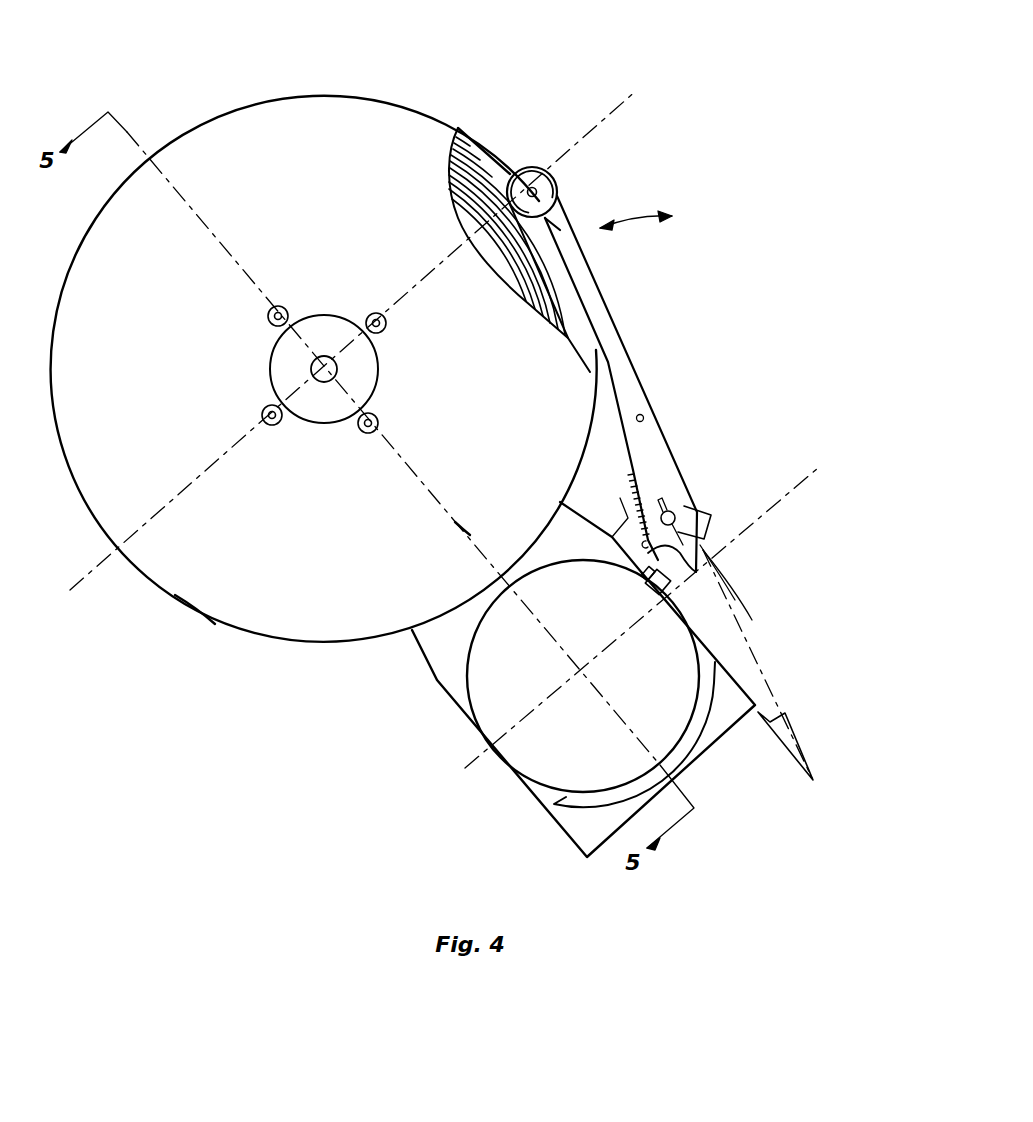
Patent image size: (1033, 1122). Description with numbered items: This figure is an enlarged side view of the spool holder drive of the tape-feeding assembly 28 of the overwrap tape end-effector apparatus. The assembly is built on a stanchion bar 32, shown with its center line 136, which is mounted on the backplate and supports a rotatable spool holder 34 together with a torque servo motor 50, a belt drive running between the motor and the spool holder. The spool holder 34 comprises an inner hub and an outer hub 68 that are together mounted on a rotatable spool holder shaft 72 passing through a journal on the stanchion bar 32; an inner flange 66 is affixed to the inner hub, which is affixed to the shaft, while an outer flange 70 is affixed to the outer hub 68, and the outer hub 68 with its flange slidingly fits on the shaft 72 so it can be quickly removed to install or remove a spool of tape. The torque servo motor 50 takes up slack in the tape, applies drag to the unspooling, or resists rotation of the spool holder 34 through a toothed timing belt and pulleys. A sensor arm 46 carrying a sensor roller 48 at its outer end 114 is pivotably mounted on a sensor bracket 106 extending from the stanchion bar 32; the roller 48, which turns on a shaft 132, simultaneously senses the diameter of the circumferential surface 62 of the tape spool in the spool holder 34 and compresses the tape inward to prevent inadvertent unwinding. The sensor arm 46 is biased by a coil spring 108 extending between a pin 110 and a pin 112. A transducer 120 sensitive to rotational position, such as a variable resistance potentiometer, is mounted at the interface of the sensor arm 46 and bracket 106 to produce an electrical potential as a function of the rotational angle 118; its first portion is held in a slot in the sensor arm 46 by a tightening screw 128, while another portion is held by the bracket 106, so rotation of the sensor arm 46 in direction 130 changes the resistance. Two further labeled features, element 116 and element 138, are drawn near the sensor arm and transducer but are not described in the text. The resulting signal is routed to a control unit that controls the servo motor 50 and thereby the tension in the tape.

The tape-feeding assembly 28 is at (766, 94).
The stanchion bar 32 is at (728, 698).
The spool holder 34 is at (324, 369).
The sensor arm 46 is at (607, 310).
The sensor roller 48 is at (557, 190).
The torque servo motor 50 is at (583, 676).
The circumferential surface 62 is at (481, 172).
The inner flange 66 is at (473, 147).
The outer hub 68 is at (280, 368).
The outer flange 70 is at (190, 580).
The spool holder shaft 72 is at (325, 378).
The sensor bracket 106 is at (623, 537).
The coil spring 108 is at (640, 487).
The pin 110 is at (672, 506).
The pin 112 is at (644, 416).
The outer end 114 is at (548, 206).
The holder 116 is at (735, 600).
The rotational angle 118 is at (773, 723).
The transducer 120 is at (752, 620).
The tightening screw 128 is at (708, 524).
The direction 130 is at (648, 222).
The shaft 132 is at (532, 168).
The center line 136 is at (460, 522).
The plate 138 is at (702, 516).